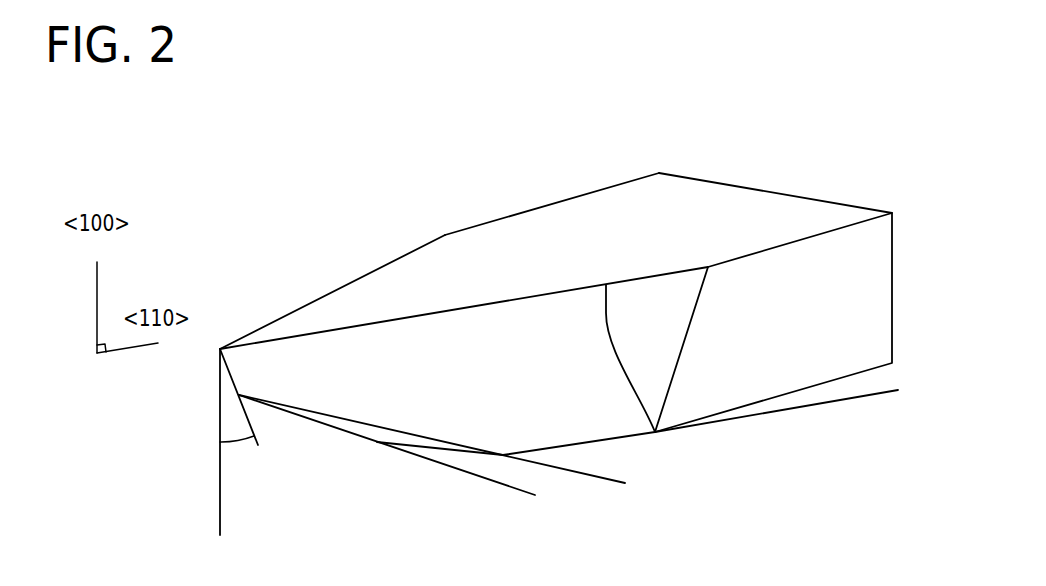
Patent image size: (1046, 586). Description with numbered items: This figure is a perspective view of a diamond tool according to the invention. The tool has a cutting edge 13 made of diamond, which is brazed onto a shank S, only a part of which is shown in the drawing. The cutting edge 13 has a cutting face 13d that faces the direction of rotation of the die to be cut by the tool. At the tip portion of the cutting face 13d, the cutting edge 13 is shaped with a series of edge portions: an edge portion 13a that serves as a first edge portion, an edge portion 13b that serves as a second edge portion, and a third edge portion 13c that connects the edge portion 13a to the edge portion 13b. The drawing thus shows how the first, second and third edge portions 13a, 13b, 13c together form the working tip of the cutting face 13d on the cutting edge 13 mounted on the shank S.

The cutting edge 13 is at (774, 192).
The edge portion 13a is at (655, 432).
The edge portion 13b is at (373, 273).
The third edge portion 13c is at (229, 394).
The cutting face 13d is at (437, 258).
The shank S is at (458, 458).